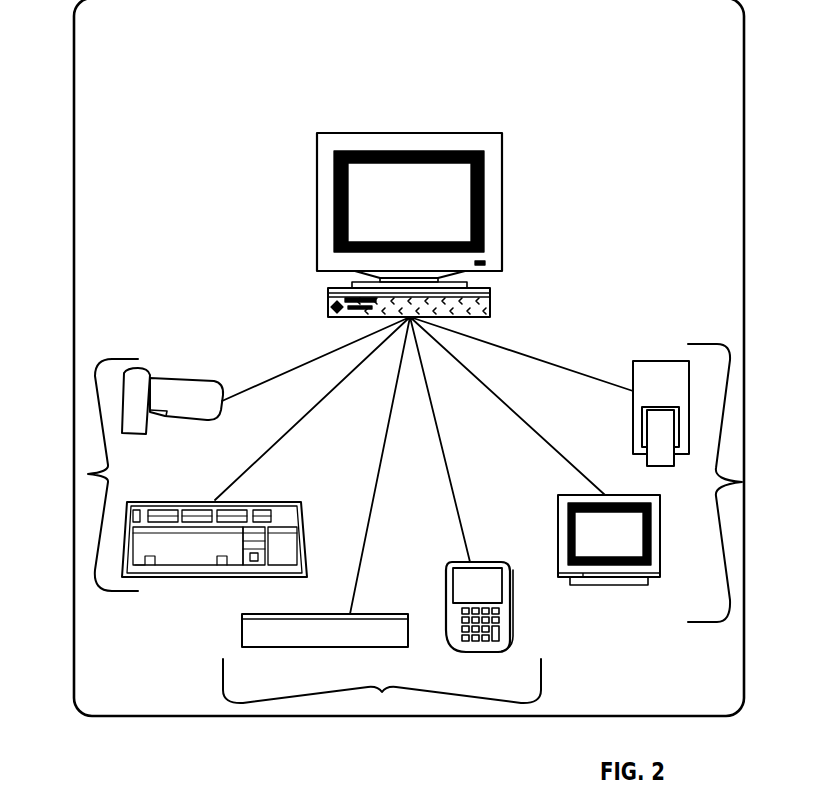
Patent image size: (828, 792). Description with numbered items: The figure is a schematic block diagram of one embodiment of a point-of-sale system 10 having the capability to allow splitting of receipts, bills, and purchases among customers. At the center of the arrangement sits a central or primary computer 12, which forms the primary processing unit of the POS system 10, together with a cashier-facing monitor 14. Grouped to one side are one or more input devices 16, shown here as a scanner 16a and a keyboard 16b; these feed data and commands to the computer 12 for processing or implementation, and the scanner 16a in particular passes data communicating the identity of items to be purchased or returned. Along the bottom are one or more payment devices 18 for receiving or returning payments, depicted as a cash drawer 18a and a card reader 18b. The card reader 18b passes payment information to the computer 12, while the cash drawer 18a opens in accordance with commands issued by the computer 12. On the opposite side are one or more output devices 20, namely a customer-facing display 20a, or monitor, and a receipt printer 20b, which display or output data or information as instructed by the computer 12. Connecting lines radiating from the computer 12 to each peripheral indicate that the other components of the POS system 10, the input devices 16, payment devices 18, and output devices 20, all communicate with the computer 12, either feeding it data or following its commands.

The POS system 10 is at (409, 358).
The computer 12 is at (507, 288).
The monitor 14 is at (302, 174).
The input devices 16 is at (88, 474).
The scanner 16a is at (186, 400).
The keyboard 16b is at (280, 512).
The payment devices 18 is at (382, 692).
The cash drawer 18a is at (325, 632).
The card reader 18b is at (468, 563).
The output devices 20 is at (742, 482).
The customer-facing display 20a is at (605, 548).
The receipt printer 20b is at (652, 382).